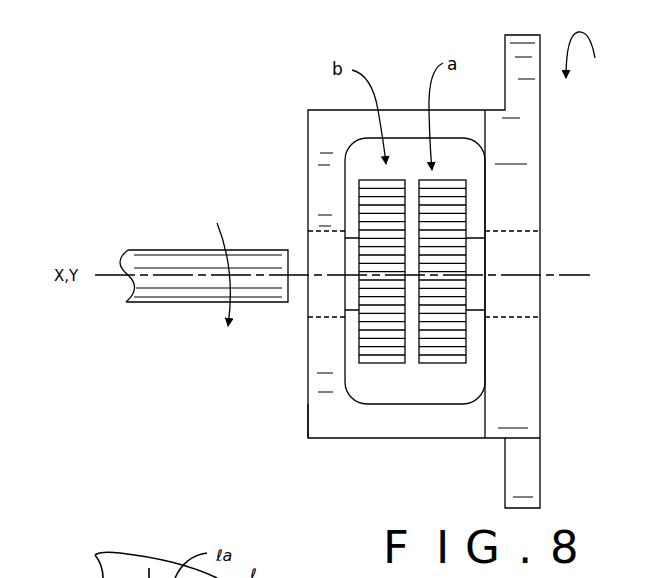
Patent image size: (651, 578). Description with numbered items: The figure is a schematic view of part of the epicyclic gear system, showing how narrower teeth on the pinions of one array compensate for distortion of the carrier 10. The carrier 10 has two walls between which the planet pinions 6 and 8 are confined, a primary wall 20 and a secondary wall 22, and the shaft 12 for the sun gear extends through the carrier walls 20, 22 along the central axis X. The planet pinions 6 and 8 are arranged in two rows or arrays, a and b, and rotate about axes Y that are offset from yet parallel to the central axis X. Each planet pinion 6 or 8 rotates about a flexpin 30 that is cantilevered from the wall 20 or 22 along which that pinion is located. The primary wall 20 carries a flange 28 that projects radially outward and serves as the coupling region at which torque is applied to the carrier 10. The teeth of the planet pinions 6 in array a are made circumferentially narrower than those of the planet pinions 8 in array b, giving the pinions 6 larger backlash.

The planet pinion 6 is at (467, 193).
The planet pinion 8 is at (377, 212).
The carrier 10 is at (308, 125).
The shaft 12 is at (211, 262).
The primary wall 20 is at (500, 358).
The secondary wall 22 is at (325, 410).
The flange 28 is at (512, 459).
The flexpin 30 is at (357, 295).